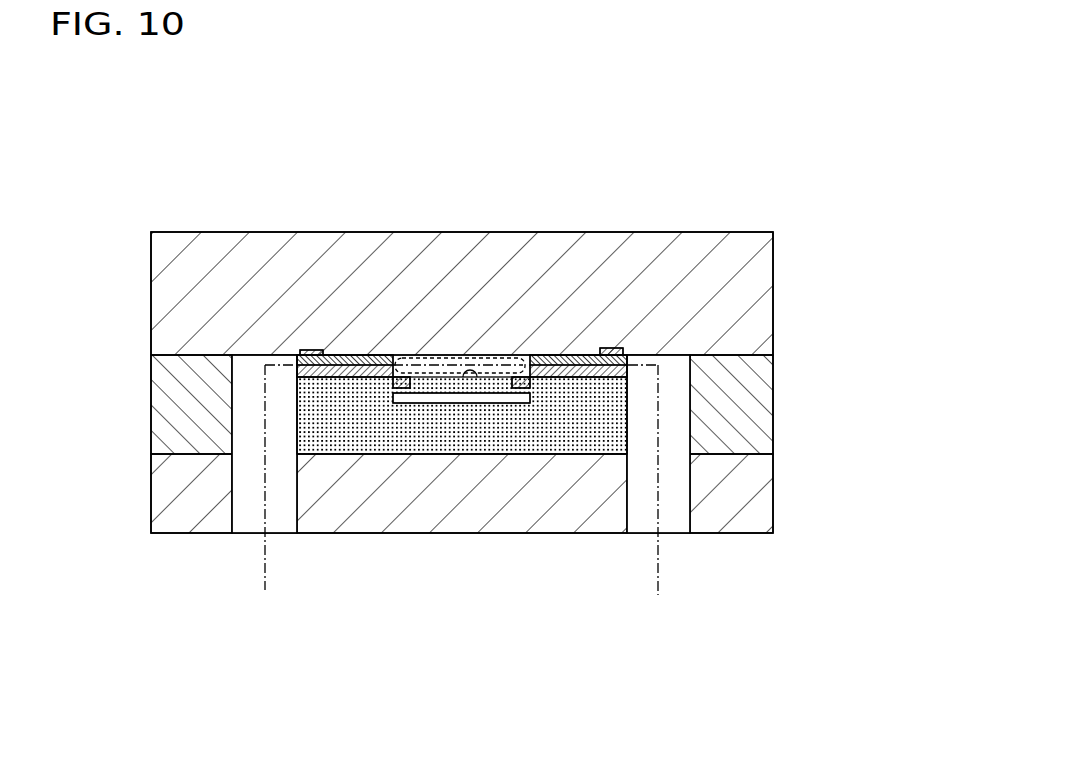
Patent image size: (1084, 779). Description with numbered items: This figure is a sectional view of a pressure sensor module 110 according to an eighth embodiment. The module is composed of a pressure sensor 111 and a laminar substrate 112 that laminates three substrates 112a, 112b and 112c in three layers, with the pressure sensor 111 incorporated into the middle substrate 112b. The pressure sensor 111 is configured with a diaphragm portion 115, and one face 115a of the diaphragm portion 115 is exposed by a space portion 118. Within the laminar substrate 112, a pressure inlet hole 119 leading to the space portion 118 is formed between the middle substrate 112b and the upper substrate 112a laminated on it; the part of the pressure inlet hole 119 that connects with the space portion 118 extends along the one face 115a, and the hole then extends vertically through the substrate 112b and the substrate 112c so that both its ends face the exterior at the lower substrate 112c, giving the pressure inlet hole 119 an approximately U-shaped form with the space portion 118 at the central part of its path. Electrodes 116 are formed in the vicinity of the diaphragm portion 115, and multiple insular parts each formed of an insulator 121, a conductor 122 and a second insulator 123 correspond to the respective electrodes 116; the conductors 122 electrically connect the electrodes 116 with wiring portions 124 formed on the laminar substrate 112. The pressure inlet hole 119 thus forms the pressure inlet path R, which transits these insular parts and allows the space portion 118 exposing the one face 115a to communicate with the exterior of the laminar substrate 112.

The pressure sensor module 110 is at (158, 218).
The pressure sensor 111 is at (445, 375).
The laminar substrate 112 is at (877, 282).
The substrate 112a is at (753, 300).
The substrate 112b is at (752, 420).
The substrate 112c is at (758, 495).
The diaphragm portion 115 is at (433, 387).
The one face of the diaphragm portion 115a is at (478, 377).
The electrodes 116 is at (353, 377).
The space portion 118 is at (497, 358).
The pressure inlet hole 119 is at (468, 362).
The insulator 121 is at (322, 377).
The conductor 122 is at (337, 360).
The second insulator 123 is at (297, 357).
The wiring portions 124 is at (313, 352).
The pressure inlet path R is at (266, 592).